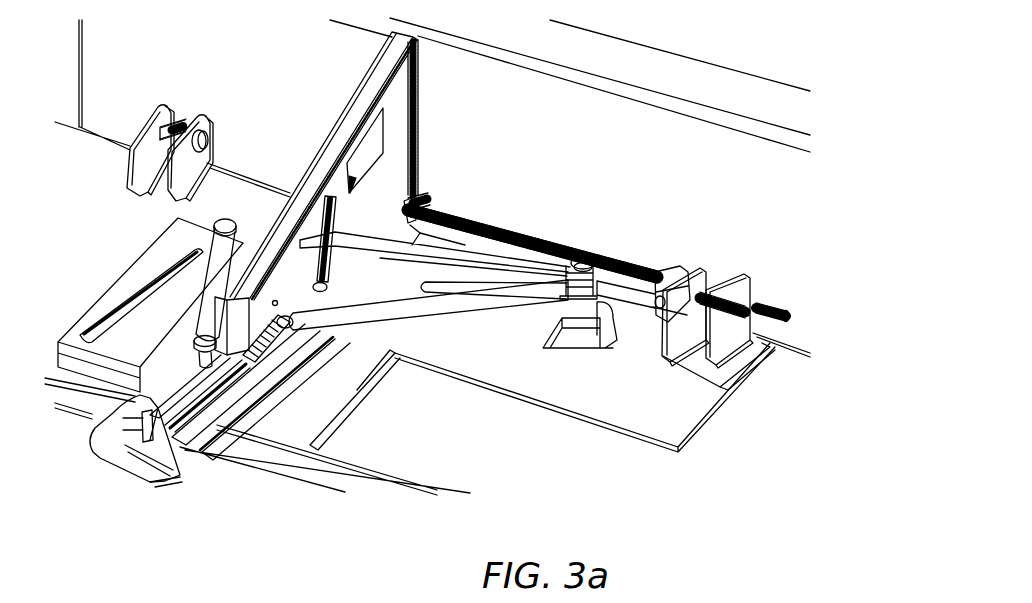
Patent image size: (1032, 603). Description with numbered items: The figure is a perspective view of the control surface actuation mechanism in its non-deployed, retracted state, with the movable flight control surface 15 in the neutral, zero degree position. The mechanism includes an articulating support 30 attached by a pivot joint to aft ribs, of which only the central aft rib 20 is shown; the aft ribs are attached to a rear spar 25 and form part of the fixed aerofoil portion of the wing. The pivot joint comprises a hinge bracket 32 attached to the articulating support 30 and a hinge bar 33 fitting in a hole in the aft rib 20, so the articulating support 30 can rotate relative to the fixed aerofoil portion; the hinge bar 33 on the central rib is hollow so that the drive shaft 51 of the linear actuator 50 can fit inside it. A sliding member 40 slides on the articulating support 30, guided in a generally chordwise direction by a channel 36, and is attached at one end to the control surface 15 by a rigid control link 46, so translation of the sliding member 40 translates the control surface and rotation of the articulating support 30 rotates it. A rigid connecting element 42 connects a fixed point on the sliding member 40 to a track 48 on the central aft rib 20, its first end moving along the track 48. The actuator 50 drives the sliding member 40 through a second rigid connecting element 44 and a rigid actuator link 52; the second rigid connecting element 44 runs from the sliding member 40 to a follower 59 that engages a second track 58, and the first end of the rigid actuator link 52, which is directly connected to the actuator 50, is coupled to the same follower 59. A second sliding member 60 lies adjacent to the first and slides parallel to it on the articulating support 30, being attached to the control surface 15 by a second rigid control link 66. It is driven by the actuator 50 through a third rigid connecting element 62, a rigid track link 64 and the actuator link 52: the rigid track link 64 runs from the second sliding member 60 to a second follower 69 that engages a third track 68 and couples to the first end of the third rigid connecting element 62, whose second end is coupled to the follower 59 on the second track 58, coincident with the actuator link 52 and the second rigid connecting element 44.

The movable flight control surface 15 is at (200, 467).
The aft rib 20 is at (373, 80).
The rear spar 25 is at (702, 137).
The articulating support 30 is at (652, 412).
The hinge bracket 32 is at (148, 135).
The hinge bar 33 is at (168, 125).
The channel 36 is at (267, 377).
The sliding member 40 is at (222, 393).
The rigid connecting element 42 is at (293, 192).
The second rigid connecting element 44 is at (390, 307).
The rigid control link 46 is at (188, 455).
The track 48 is at (293, 229).
The linear actuator 50 is at (673, 280).
The drive shaft 51 is at (508, 228).
The rigid actuator link 52 is at (627, 290).
The second track 58 is at (438, 287).
The follower 59 is at (581, 257).
The second sliding member 60 is at (200, 377).
The third rigid connecting element 62 is at (470, 220).
The rigid track link 64 is at (215, 278).
The second rigid control link 66 is at (135, 438).
The third track 68 is at (148, 297).
The second follower 69 is at (215, 224).